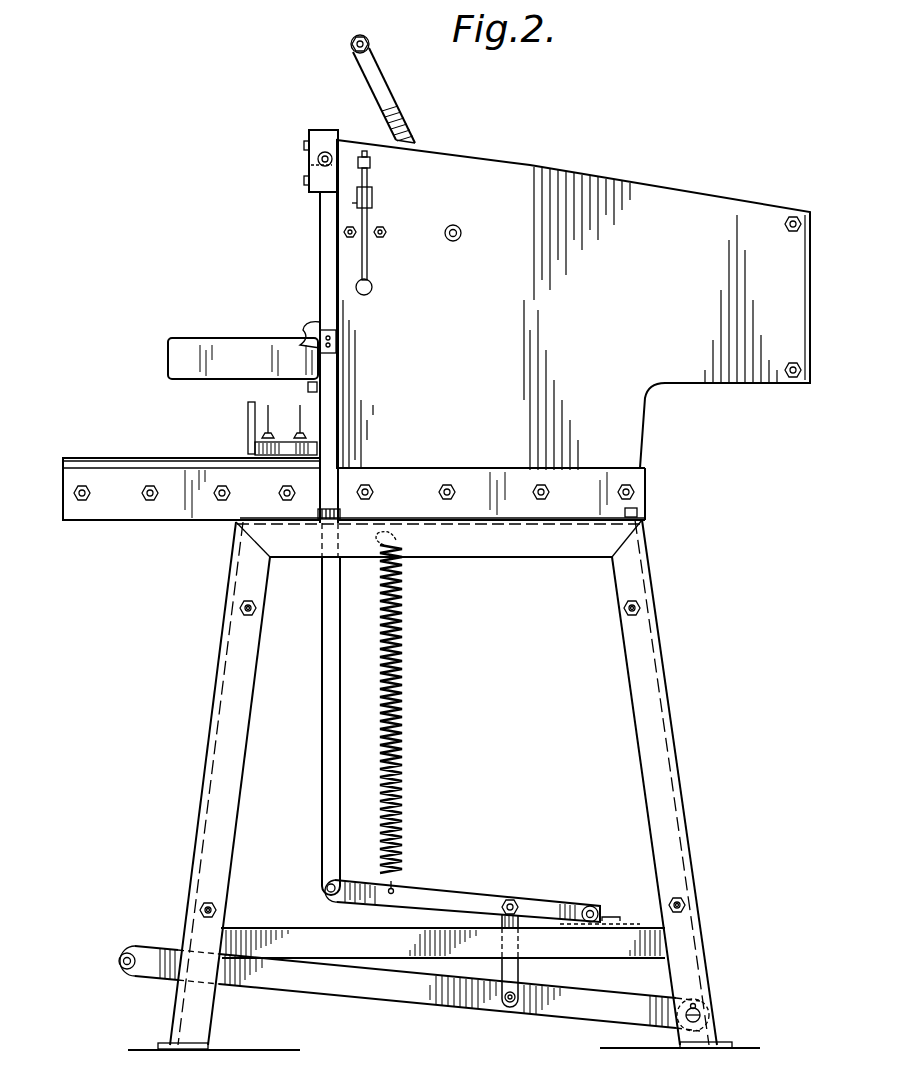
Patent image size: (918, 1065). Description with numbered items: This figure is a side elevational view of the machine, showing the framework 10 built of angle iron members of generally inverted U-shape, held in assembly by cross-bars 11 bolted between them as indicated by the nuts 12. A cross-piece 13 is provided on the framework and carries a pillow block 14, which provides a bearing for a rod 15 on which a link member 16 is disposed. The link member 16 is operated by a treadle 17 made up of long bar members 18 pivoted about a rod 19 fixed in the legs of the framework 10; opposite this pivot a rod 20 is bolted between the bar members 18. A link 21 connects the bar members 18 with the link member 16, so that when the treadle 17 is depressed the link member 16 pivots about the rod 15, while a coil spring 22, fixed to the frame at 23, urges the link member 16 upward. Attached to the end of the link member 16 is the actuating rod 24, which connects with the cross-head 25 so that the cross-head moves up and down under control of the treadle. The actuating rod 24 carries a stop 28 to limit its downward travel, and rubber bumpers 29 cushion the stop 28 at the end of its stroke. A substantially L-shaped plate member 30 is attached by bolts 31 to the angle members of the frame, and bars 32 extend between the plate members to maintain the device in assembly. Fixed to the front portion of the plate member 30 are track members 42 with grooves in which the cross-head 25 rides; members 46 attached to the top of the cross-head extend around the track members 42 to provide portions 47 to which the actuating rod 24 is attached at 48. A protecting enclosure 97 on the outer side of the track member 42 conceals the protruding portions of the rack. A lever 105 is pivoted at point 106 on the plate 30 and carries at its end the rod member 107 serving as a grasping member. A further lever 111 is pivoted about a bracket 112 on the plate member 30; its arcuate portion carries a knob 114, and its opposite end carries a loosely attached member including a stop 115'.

The framework 10 is at (650, 650).
The cross-bar 11 is at (244, 605).
The nut 12 is at (244, 609).
The cross-piece 13 is at (347, 937).
The pillow block 14 is at (607, 918).
The rod 15 is at (586, 906).
The link member 16 is at (455, 892).
The treadle 17 is at (163, 982).
The bar member 18 is at (337, 987).
The rod 19 is at (702, 1014).
The rod 20 is at (120, 956).
The link 21 is at (524, 986).
The coil spring 22 is at (402, 703).
The spring attachment point 23 is at (396, 542).
The actuating rod 24 is at (322, 738).
The cross-head 25 is at (309, 153).
The stop 28 is at (303, 324).
The rubber bumper 29 is at (320, 512).
The plate member 30 is at (612, 270).
The bolt 31 is at (367, 484).
The bar 32 is at (794, 216).
The track member 42 is at (320, 268).
The cross-head side member 46 is at (318, 161).
The attachment portion 47 is at (305, 142).
The attachment point 48 is at (322, 166).
The protecting enclosure 97 is at (262, 352).
The lever 105 is at (398, 92).
The pivot point 106 is at (453, 226).
The rod member 107 is at (369, 42).
The lever 111 is at (367, 262).
The bracket 112 is at (372, 200).
The knob 114 is at (372, 288).
The stop 115' is at (399, 164).